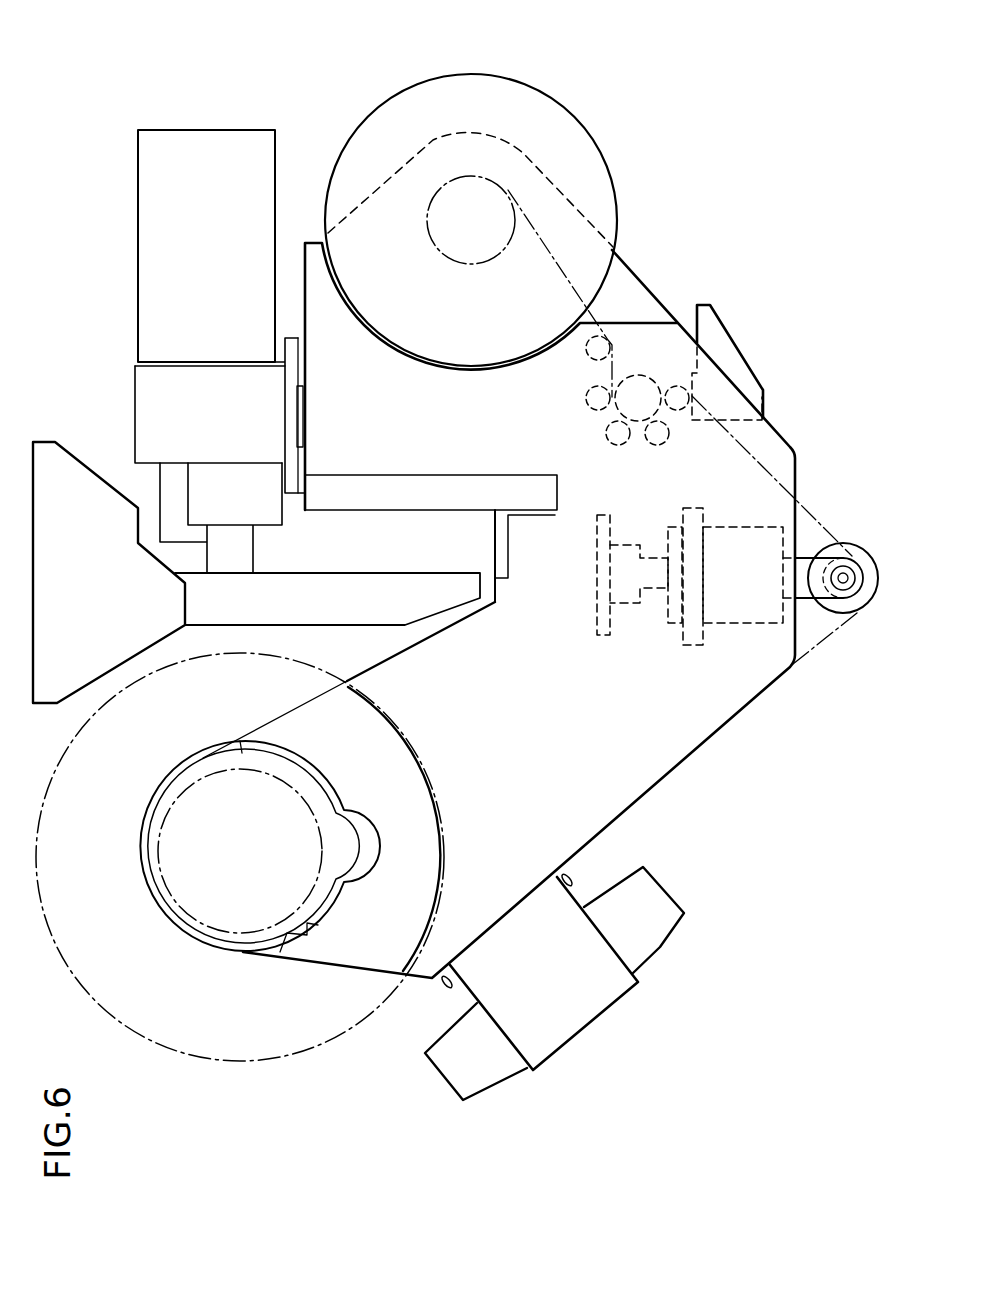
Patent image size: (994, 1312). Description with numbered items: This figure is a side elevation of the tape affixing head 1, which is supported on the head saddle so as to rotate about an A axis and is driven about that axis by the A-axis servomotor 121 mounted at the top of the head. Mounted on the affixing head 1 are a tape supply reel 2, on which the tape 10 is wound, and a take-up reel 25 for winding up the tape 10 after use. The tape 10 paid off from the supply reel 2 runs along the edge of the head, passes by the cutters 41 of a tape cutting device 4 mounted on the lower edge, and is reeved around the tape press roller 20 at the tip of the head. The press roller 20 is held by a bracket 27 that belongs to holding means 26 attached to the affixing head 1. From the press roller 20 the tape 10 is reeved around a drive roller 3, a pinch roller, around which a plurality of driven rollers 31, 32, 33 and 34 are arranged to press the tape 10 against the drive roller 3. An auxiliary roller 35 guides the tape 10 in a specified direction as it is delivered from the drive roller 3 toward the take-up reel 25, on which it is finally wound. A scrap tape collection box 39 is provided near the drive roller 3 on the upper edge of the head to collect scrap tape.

The tape affixing head 1 is at (693, 747).
The tape supply reel 2 is at (228, 1050).
The drive roller 3 is at (645, 378).
The tape cutting device 4 is at (583, 1052).
The tape 10 is at (827, 510).
The tape press roller 20 is at (842, 610).
The take-up reel 25 is at (362, 117).
The holding means 26 is at (728, 627).
The bracket 27 is at (836, 562).
The driven roller 31 is at (686, 412).
The driven roller 32 is at (657, 447).
The driven roller 33 is at (605, 430).
The driven roller 34 is at (584, 395).
The auxiliary roller 35 is at (583, 343).
The scrap tape collection box 39 is at (718, 320).
The cutters 41 is at (443, 995).
The A-axis servomotor 121 is at (140, 187).